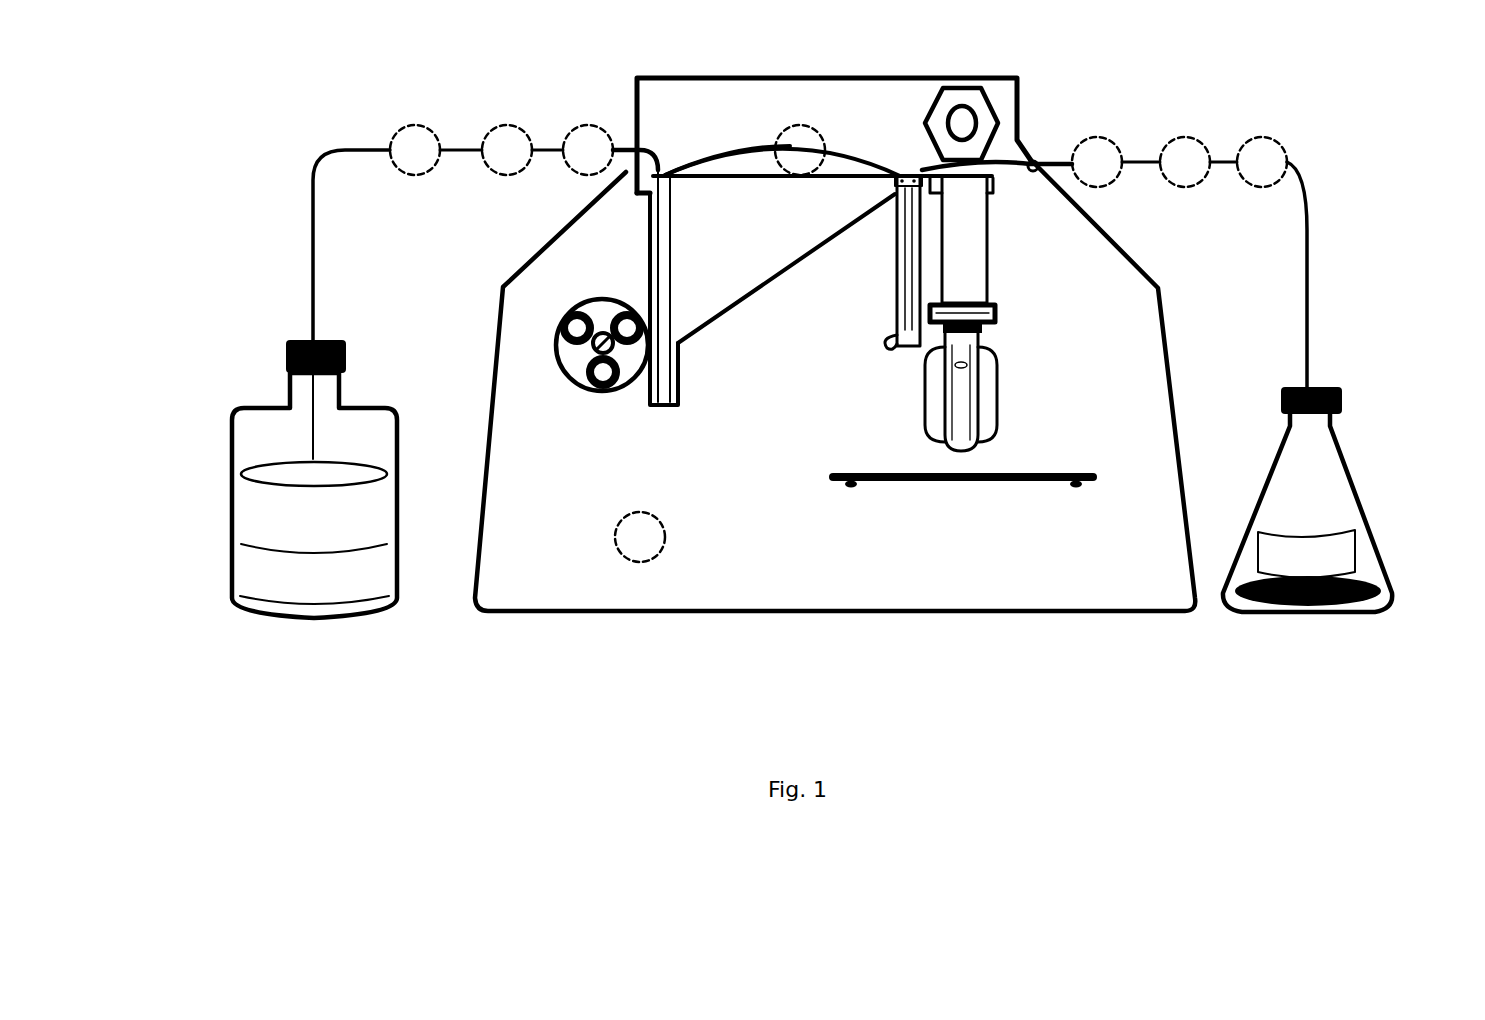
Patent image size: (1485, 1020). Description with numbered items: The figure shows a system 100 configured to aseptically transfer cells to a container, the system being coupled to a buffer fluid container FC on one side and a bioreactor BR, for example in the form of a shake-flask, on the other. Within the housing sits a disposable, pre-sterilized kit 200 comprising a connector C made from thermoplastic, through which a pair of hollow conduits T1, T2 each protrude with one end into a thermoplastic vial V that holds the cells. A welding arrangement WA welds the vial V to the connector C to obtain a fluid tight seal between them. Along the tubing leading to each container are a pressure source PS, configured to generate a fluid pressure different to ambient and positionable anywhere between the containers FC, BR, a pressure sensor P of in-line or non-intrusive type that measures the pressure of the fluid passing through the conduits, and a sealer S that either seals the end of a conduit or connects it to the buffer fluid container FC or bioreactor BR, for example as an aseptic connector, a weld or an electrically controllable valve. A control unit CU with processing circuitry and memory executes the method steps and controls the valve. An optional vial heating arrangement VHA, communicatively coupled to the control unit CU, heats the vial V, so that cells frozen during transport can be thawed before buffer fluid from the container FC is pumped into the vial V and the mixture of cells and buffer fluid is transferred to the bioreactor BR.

The system 100 is at (1150, 338).
The kit 200 is at (810, 304).
The pressure source PS is at (838, 156).
The sealer S is at (846, 156).
The pressure sensor P is at (842, 156).
The conduit T1 is at (727, 154).
The conduit T2 is at (975, 181).
The connector C is at (892, 272).
The vial V is at (983, 345).
The vial heating arrangement VHA is at (923, 395).
The welding arrangement WA is at (832, 478).
The control unit CU is at (640, 537).
The buffer fluid container FC is at (228, 512).
The bioreactor BR is at (1364, 492).